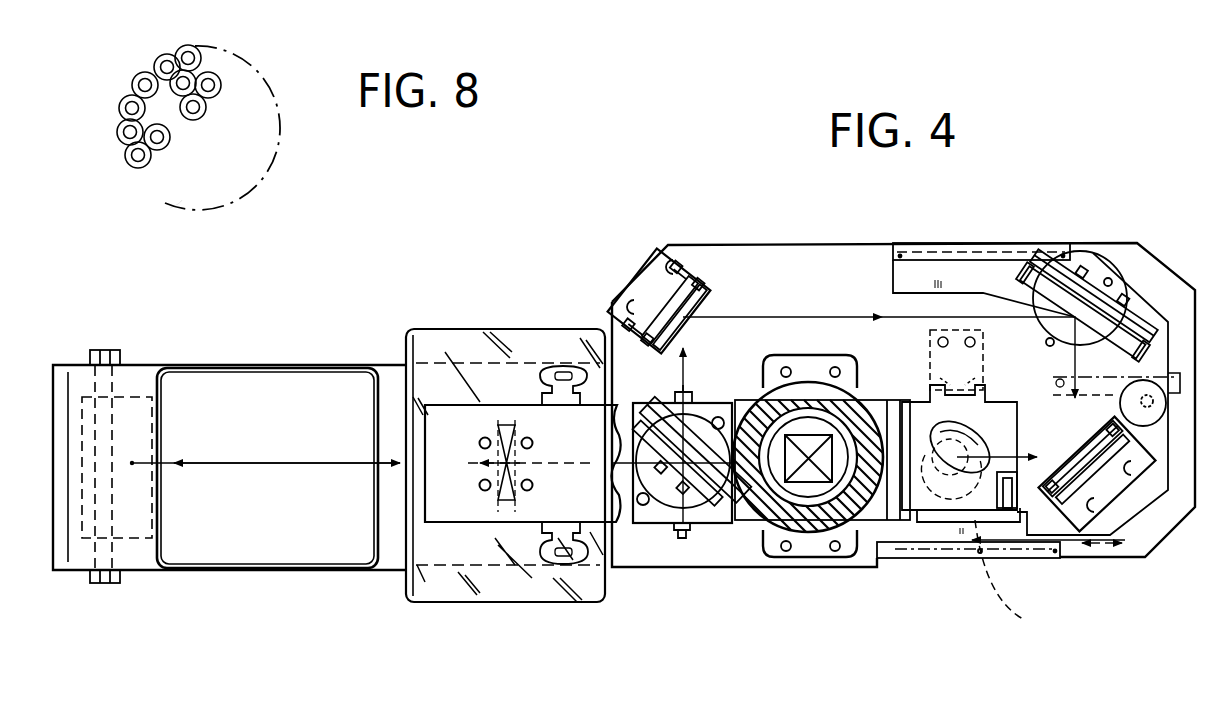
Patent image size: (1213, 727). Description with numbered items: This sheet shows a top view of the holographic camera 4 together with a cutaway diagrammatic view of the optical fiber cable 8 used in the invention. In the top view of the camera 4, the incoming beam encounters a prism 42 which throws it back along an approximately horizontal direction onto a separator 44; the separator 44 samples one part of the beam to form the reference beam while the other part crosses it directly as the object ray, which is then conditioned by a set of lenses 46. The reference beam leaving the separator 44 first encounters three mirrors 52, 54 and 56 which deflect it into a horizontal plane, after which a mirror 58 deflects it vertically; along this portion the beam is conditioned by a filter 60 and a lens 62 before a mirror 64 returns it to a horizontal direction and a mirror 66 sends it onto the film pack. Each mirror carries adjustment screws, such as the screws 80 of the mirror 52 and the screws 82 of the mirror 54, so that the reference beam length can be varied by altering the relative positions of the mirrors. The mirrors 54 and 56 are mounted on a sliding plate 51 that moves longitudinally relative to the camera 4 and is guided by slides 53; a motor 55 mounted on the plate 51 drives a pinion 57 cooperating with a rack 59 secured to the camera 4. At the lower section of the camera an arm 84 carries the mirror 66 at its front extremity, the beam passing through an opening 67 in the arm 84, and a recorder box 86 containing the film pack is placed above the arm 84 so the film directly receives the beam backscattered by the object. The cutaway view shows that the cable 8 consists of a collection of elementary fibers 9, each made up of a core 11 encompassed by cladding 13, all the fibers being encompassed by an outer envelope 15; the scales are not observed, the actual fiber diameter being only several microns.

In FIG. 4, the camera 4 is at (890, 240).
In FIG. 8, the cable 8 is at (283, 148).
In FIG. 8, the elementary fibers 9 is at (118, 118).
In FIG. 8, the core 11 is at (200, 44).
In FIG. 8, the cladding 13 is at (165, 150).
In FIG. 8, the outer envelope 15 is at (235, 204).
In FIG. 4, the prism 42 is at (857, 393).
In FIG. 4, the separator 44 is at (725, 530).
In FIG. 4, the set of lenses 46 is at (520, 505).
In FIG. 4, the sliding plate 51 is at (1113, 522).
In FIG. 4, the mirror 52 is at (700, 308).
In FIG. 4, the slides 53 is at (1030, 556).
In FIG. 4, the mirror 54 is at (1018, 288).
In FIG. 4, the motor 55 is at (1155, 432).
In FIG. 4, the mirror 56 is at (1070, 455).
In FIG. 4, the pinion 57 is at (1062, 378).
In FIG. 4, the mirror 58 is at (935, 497).
In FIG. 4, the rack 59 is at (1185, 372).
In FIG. 4, the filter 60 is at (1020, 577).
In FIG. 4, the lens 62 is at (1065, 602).
In FIG. 4, the mirror 64 is at (1075, 615).
In FIG. 4, the mirror 66 is at (88, 388).
In FIG. 4, the opening 67 is at (235, 388).
In FIG. 4, the screws 80 is at (628, 304).
In FIG. 4, the screws 82 is at (1093, 258).
In FIG. 4, the arm 84 is at (215, 572).
In FIG. 4, the recorder box 86 is at (405, 598).